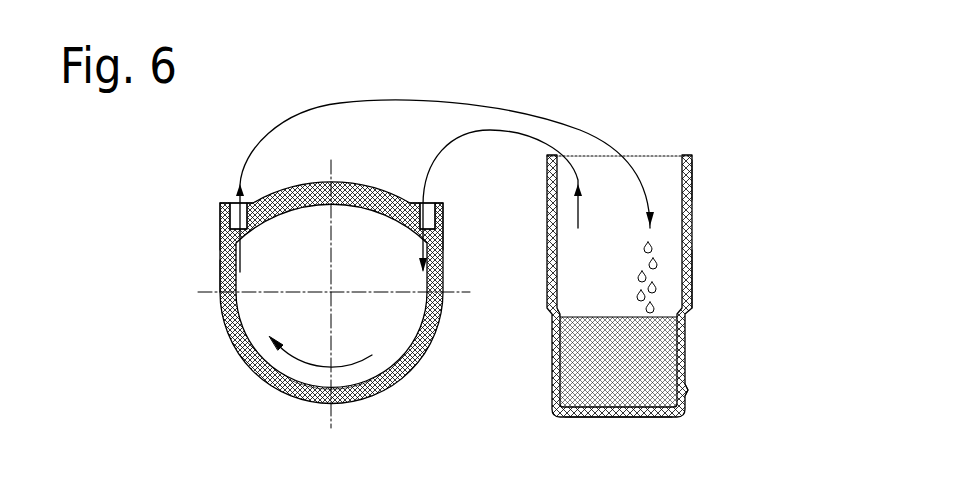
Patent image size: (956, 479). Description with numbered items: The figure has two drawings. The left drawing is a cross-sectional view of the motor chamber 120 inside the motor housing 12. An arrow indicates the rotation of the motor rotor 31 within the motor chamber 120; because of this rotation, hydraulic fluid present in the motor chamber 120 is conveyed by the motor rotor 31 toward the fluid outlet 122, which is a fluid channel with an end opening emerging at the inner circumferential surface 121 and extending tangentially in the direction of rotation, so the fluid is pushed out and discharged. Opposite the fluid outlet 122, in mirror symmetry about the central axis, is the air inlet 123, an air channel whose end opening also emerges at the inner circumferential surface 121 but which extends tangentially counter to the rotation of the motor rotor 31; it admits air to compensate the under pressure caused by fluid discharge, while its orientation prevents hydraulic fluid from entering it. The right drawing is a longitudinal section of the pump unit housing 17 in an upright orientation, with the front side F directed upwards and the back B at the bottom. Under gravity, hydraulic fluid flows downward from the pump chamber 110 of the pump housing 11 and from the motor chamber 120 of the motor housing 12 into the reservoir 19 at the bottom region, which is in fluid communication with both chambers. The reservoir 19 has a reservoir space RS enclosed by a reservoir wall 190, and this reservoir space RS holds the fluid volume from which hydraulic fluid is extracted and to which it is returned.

The motor chamber 120 is at (410, 354).
The inner circumferential surface 121 is at (318, 378).
The fluid outlet 122 is at (237, 200).
The air inlet 123 is at (419, 205).
The motor housing 12 is at (223, 266).
The motor rotor 31 is at (311, 363).
The pump chamber 110 is at (590, 272).
The pump unit housing 17 is at (702, 238).
The pump housing 11 is at (692, 305).
The reservoir space RS is at (617, 350).
The reservoir wall 190 is at (688, 383).
The reservoir 19 is at (640, 418).
The front side F is at (627, 110).
The back B is at (636, 464).